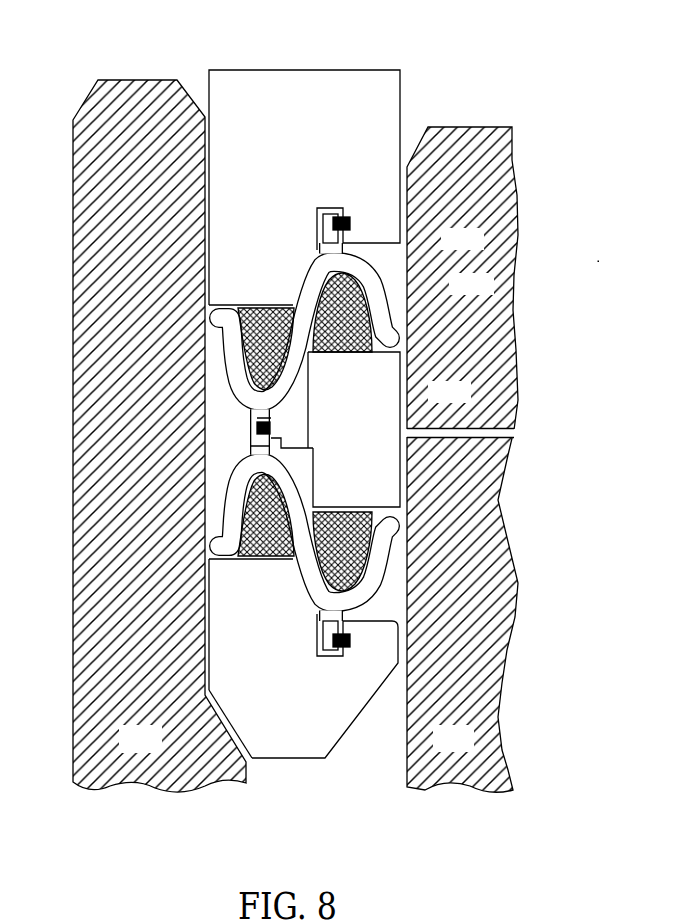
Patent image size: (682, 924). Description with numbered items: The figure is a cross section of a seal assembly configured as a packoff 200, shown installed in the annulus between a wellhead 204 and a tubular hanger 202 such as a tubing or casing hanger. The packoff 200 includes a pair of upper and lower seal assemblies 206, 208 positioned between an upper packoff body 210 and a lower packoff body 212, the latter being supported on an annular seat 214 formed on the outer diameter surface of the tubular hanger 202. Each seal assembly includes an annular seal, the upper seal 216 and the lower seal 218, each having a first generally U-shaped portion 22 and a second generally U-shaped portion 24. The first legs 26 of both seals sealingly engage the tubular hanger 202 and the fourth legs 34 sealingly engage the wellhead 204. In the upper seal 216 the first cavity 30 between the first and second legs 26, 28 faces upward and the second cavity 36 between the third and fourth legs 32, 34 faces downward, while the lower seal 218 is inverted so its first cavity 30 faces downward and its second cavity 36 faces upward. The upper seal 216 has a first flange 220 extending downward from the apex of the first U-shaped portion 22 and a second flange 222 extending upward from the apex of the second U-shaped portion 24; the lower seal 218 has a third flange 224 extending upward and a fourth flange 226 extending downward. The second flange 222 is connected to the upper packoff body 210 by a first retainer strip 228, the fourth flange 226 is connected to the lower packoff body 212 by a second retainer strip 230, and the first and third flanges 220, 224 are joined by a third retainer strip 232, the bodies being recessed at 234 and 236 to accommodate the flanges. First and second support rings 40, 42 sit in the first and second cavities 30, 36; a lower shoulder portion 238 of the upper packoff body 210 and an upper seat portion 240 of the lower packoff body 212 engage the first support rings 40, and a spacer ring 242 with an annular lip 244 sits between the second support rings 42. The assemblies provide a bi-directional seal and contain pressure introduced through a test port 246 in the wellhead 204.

The packoff 200 is at (336, 406).
The tubular hanger 202 is at (158, 750).
The wellhead 204 is at (488, 459).
The upper seal assembly 206 is at (343, 285).
The lower seal assembly 208 is at (344, 579).
The upper packoff body 210 is at (267, 104).
The lower packoff body 212 is at (303, 681).
The annular seat 214 is at (228, 721).
The upper seal 216 is at (398, 295).
The lower seal 218 is at (390, 567).
The first flange 220 is at (297, 427).
The second flange 222 is at (313, 198).
The third flange 224 is at (214, 435).
The fourth flange 226 is at (324, 666).
The first retainer strip 228 is at (343, 217).
The second retainer strip 230 is at (350, 645).
The third retainer strip 232 is at (257, 419).
The recess 234 is at (323, 208).
The recess 236 is at (333, 655).
The lower shoulder portion 238 is at (278, 305).
The upper seat portion 240 is at (280, 560).
The spacer ring 242 is at (369, 429).
The annular lip 244 is at (297, 442).
The test port 246 is at (495, 425).
The first generally U-shaped portion 22 is at (207, 432).
The second generally U-shaped portion 24 is at (352, 240).
The first leg 26 is at (222, 353).
The second leg 28 is at (306, 430).
The first cavity 30 is at (255, 432).
The third leg 32 is at (309, 268).
The fourth leg 34 is at (411, 432).
The second cavity 36 is at (347, 432).
The first support ring 40 is at (255, 430).
The second support ring 42 is at (363, 510).